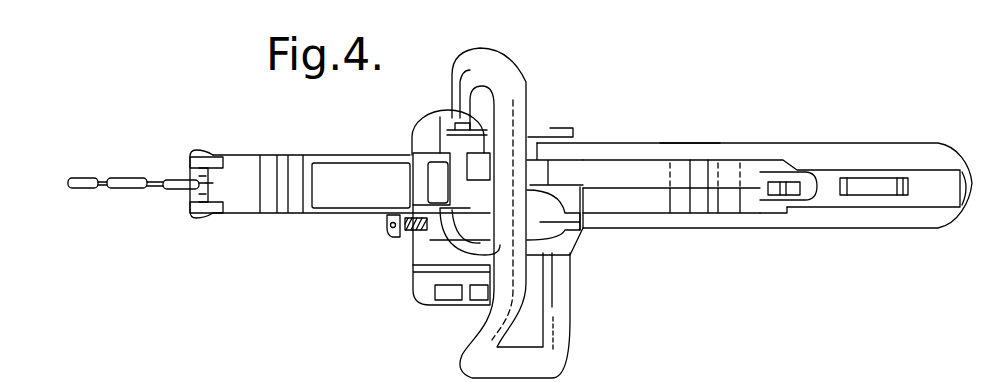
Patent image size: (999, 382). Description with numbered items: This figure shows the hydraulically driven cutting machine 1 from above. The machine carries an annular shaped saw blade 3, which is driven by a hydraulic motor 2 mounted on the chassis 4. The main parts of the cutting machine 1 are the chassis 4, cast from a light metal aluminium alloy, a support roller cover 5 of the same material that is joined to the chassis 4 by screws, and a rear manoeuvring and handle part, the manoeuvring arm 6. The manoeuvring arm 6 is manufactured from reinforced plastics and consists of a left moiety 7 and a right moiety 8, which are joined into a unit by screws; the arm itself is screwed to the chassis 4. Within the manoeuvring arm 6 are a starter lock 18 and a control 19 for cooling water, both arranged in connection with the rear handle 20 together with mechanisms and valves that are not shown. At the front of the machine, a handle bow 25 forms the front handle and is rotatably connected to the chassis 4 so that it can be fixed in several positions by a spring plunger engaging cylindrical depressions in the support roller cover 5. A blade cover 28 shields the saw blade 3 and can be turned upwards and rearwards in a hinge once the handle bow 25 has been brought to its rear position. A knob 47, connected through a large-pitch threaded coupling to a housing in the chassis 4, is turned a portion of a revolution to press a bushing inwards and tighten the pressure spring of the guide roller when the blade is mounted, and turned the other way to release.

The cutting machine 1 is at (602, 106).
The hydraulic motor 2 is at (425, 282).
The saw blade 3 is at (140, 178).
The chassis 4 is at (430, 240).
The support roller cover 5 is at (427, 133).
The manoeuvring arm 6 is at (697, 118).
The left moiety 7 is at (697, 222).
The right moiety 8 is at (747, 145).
The starter lock 18 is at (870, 190).
The control for cooling water 19 is at (775, 192).
The rear handle 20 is at (828, 183).
The handle bow 25 is at (510, 103).
The blade cover 28 is at (240, 178).
The knob 47 is at (575, 230).